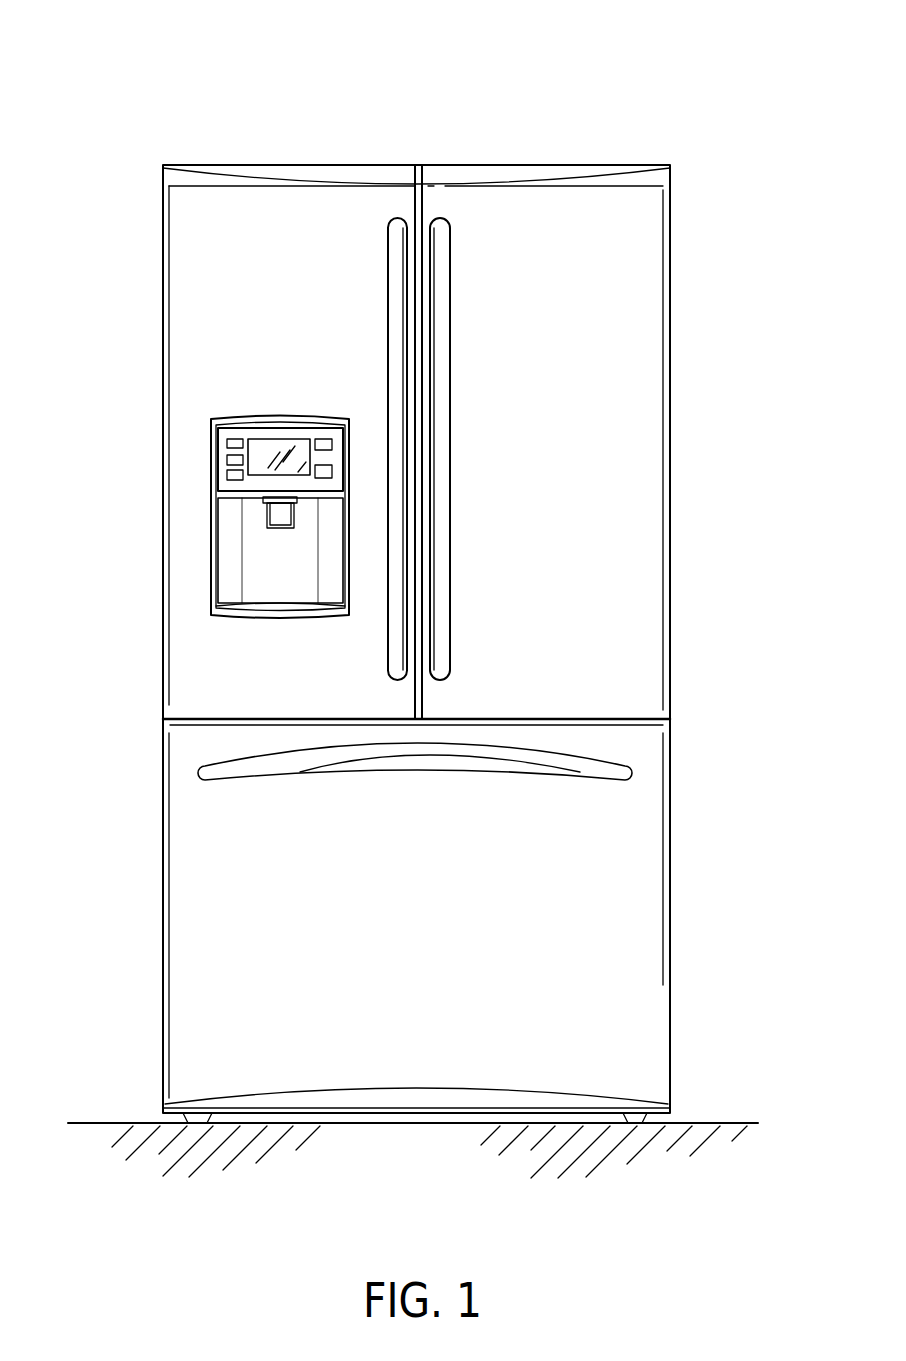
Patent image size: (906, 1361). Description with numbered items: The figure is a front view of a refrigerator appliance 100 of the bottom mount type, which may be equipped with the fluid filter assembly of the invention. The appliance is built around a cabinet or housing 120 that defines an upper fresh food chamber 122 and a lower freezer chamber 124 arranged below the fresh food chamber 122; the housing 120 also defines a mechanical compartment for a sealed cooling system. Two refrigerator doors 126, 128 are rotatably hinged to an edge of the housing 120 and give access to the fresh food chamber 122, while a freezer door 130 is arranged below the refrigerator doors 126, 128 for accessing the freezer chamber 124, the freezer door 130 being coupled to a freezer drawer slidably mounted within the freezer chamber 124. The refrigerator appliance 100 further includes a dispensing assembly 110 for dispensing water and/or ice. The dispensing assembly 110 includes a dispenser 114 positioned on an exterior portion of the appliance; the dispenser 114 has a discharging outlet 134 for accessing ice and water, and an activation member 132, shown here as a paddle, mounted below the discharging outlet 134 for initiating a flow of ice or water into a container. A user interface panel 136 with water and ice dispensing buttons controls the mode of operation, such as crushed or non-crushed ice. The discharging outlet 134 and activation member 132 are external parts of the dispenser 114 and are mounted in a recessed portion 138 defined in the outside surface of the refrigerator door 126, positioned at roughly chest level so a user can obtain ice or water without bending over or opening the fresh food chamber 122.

The refrigerator appliance 100 is at (633, 94).
The dispensing assembly 110 is at (233, 400).
The dispenser 114 is at (275, 563).
The housing 120 is at (165, 930).
The fresh food chamber 122 is at (625, 443).
The freezer chamber 124 is at (625, 857).
The refrigerator door 126 is at (195, 268).
The refrigerator door 128 is at (645, 315).
The freezer door 130 is at (637, 975).
The activation member 132 is at (265, 513).
The discharging outlet 134 is at (267, 527).
The user interface panel 136 is at (225, 452).
The recessed portion 138 is at (298, 582).